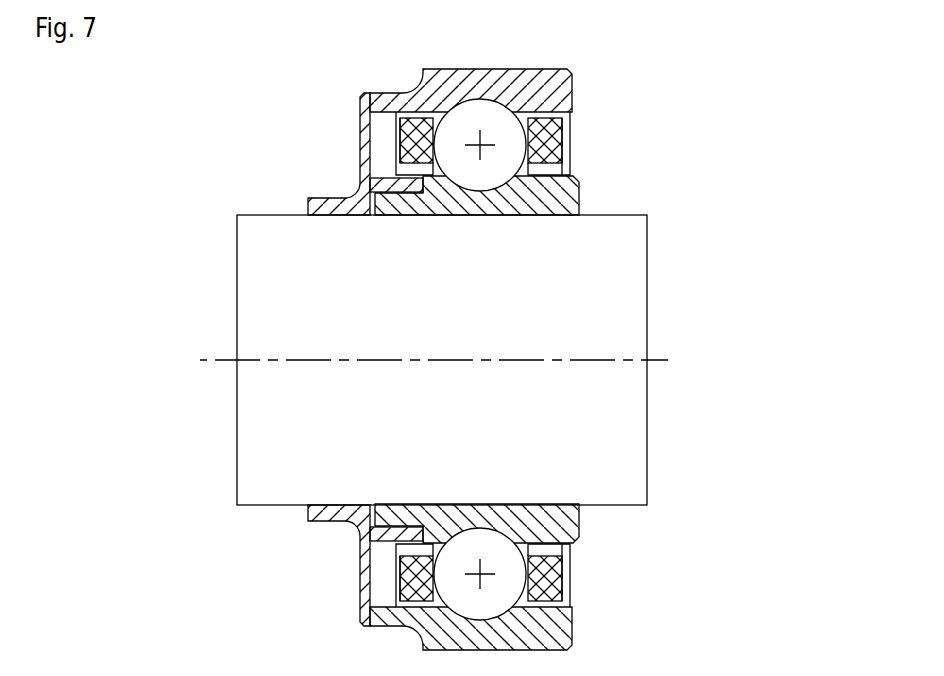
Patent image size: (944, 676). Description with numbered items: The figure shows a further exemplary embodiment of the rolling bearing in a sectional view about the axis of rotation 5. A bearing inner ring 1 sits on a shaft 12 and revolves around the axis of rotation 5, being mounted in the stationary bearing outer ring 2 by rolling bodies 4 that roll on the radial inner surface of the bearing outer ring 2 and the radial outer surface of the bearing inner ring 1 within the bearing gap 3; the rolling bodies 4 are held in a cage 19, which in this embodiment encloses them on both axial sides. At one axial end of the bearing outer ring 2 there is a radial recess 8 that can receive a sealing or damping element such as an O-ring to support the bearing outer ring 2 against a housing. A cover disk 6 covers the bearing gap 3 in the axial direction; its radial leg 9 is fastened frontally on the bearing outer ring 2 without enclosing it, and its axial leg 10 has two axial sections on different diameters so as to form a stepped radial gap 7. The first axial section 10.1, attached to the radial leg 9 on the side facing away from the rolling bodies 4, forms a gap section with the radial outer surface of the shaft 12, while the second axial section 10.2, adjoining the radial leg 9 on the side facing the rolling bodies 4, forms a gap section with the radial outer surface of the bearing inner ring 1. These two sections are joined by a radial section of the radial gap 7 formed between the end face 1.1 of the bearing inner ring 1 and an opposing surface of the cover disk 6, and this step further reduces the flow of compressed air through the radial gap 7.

The bearing inner ring 1 is at (557, 200).
The end face of the bearing inner ring 1.1 is at (244, 524).
The bearing outer ring 2 is at (451, 333).
The bearing gap 3 is at (567, 145).
The rolling bodies 4 is at (478, 178).
The axis of rotation 5 is at (607, 358).
The cover disk 6 is at (261, 146).
The radial gap 7 is at (261, 164).
The radial recess 8 is at (408, 88).
The radial leg 9 is at (363, 93).
The axial leg 10 is at (366, 188).
The first axial section 10.1 is at (327, 522).
The second axial section 10.2 is at (395, 538).
The shaft 12 is at (623, 453).
The cage 19 is at (540, 572).